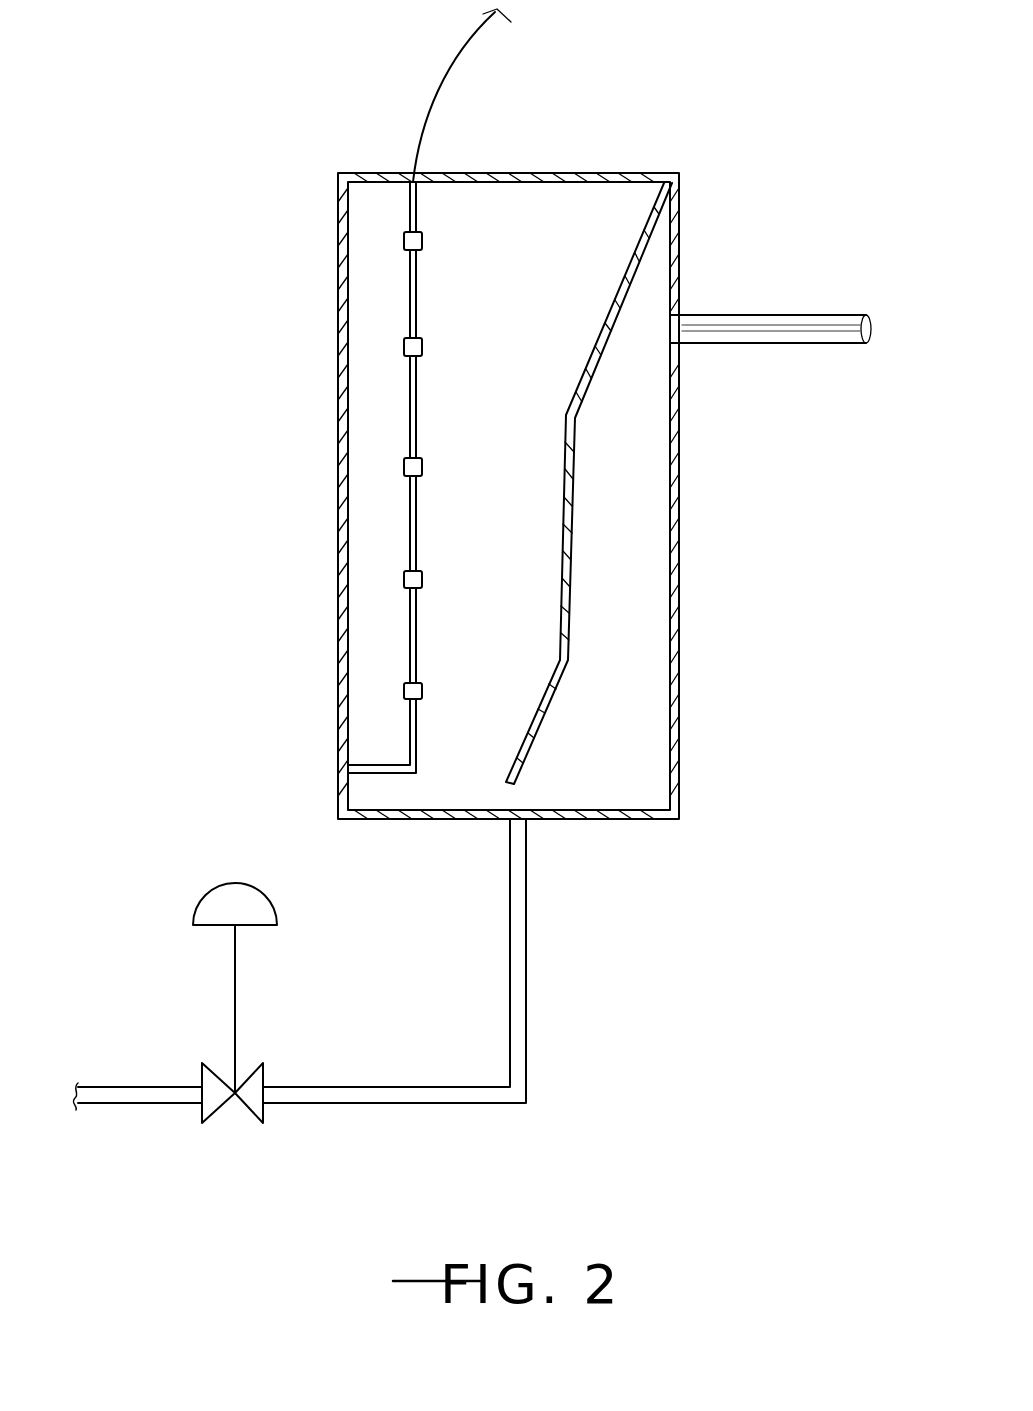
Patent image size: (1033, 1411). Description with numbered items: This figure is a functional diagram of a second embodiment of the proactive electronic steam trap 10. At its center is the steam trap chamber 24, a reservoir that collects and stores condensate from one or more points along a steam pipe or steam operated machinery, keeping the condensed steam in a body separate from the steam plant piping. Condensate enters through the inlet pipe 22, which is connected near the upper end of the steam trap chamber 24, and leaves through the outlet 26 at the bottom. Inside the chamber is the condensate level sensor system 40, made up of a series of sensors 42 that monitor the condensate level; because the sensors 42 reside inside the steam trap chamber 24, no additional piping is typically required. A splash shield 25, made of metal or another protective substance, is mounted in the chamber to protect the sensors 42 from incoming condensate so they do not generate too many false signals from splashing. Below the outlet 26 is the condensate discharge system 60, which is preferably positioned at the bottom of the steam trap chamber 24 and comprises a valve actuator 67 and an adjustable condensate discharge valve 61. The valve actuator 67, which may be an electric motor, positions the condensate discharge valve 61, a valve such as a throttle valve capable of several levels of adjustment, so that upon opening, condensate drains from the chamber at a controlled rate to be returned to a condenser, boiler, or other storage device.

The proactive electronic steam trap 10 is at (740, 104).
The inlet pipe 22 is at (765, 344).
The steam trap chamber 24 is at (645, 525).
The splash shield 25 is at (605, 320).
The outlet 26 is at (527, 912).
The condensate level sensor system 40 is at (430, 105).
The condensate level sensors 42 is at (405, 349).
The condensate discharge system 60 is at (252, 873).
The condensate discharge valve 61 is at (268, 1078).
The valve actuator 67 is at (277, 905).